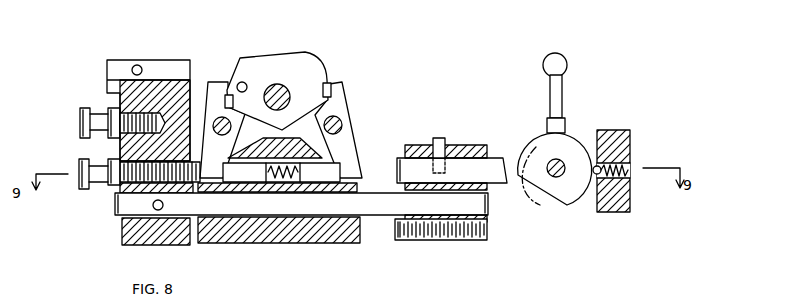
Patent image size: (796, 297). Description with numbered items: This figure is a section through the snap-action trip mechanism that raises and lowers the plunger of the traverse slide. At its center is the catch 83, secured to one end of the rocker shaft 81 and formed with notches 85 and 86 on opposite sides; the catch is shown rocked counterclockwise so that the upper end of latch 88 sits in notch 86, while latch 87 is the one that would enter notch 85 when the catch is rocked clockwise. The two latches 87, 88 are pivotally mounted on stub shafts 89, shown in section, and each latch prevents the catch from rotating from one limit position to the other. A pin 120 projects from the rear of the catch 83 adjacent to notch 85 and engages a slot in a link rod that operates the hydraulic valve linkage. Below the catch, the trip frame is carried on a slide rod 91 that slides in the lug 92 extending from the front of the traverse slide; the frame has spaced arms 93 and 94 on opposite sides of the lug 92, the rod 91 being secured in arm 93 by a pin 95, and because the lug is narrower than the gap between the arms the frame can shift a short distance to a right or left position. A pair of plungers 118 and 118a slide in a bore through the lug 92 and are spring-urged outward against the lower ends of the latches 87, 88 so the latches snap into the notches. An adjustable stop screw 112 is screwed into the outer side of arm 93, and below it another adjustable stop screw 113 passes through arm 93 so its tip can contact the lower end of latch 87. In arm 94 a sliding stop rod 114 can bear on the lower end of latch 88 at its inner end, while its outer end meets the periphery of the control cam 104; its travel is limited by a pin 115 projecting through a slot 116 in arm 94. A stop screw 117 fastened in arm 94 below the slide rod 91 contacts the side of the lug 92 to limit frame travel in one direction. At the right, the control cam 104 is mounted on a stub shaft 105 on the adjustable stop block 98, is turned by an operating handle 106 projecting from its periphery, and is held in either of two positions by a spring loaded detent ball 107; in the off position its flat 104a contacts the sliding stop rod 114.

The rocker shaft 81 is at (286, 88).
The catch 83 is at (281, 57).
The notch 85 is at (227, 95).
The notch 86 is at (327, 82).
The latch 87 is at (216, 84).
The latch 88 is at (342, 82).
The stub shaft 89 is at (341, 122).
The slide rod 91 is at (482, 205).
The lug 92 is at (310, 242).
The arm 93 is at (135, 232).
The arm 94 is at (483, 238).
The pin 95 is at (153, 205).
The adjustable stop block 98 is at (630, 199).
The control cam 104 is at (565, 135).
The flat 104a is at (540, 202).
The stub shaft 105 is at (550, 158).
The operating handle 106 is at (553, 92).
The spring loaded detent ball 107 is at (597, 178).
The adjustable stop screw 112 is at (84, 122).
The adjustable stop screw 113 is at (86, 183).
The sliding stop rod 114 is at (495, 160).
The pin 115 is at (437, 143).
The slot 116 is at (458, 152).
The stop screw 117 is at (398, 237).
The plunger 118 is at (240, 180).
The plunger 118a is at (330, 180).
The pin 120 is at (246, 84).